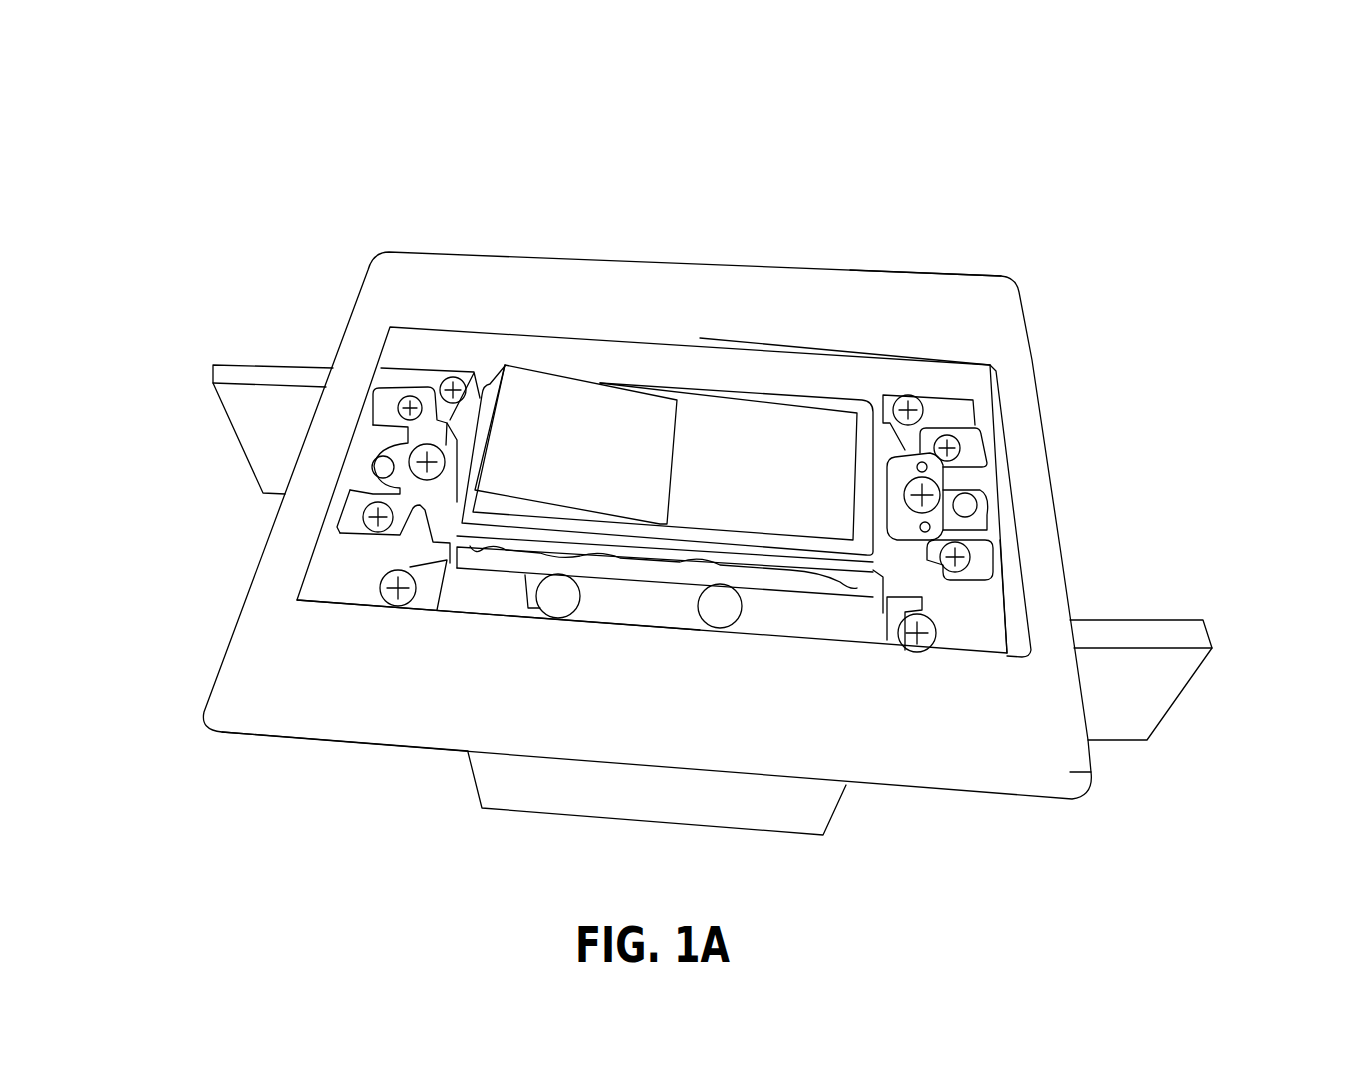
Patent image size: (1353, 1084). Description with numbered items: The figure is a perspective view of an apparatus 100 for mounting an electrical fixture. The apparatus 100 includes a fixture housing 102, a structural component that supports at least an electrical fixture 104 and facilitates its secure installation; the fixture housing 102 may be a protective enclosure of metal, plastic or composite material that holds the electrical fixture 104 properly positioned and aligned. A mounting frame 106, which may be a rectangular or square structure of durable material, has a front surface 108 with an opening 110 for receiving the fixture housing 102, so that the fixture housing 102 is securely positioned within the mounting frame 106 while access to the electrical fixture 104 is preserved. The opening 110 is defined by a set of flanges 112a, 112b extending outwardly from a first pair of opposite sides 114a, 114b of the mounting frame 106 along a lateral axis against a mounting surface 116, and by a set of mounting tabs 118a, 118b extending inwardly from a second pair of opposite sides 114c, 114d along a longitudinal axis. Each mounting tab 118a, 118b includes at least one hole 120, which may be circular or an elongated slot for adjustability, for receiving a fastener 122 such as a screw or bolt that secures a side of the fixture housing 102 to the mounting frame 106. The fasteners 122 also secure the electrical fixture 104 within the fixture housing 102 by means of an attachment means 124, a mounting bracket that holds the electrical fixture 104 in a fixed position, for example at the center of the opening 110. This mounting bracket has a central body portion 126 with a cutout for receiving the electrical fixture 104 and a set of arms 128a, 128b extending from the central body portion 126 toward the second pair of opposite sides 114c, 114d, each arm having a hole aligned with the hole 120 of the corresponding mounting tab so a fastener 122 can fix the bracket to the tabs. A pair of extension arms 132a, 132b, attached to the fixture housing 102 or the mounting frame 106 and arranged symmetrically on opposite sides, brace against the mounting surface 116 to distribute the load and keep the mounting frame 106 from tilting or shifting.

The apparatus 100 is at (296, 104).
The fixture housing 102 is at (820, 808).
The electrical fixture 104 is at (643, 410).
The mounting frame 106 is at (440, 245).
The front surface 108 is at (998, 302).
The opening 110 is at (382, 313).
The flange 112a is at (415, 725).
The flange 112b is at (923, 298).
The first pair of opposite sides 114a is at (347, 600).
The first pair of opposite sides 114b is at (817, 350).
The second pair of opposite sides 114c is at (345, 536).
The second pair of opposite sides 114d is at (1017, 550).
The mounting surface 116 is at (1067, 772).
The mounting tab 118a is at (350, 568).
The mounting tab 118b is at (987, 603).
The hole 120 is at (937, 488).
The fastener 122 is at (943, 490).
The attachment means 124 is at (380, 403).
The central body portion 126 is at (457, 437).
The arm 128a is at (347, 497).
The arm 128b is at (397, 387).
The extension arm 132a is at (243, 417).
The extension arm 132b is at (1152, 685).